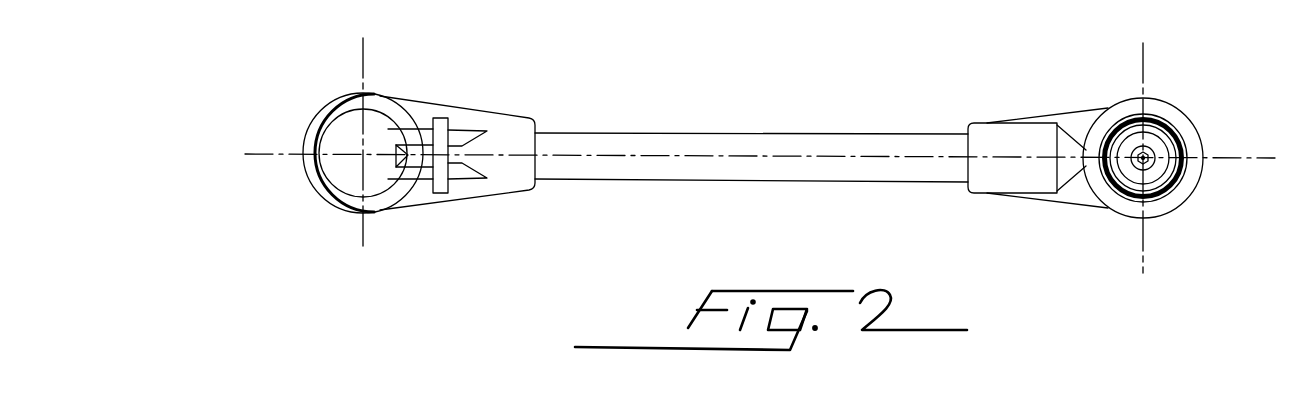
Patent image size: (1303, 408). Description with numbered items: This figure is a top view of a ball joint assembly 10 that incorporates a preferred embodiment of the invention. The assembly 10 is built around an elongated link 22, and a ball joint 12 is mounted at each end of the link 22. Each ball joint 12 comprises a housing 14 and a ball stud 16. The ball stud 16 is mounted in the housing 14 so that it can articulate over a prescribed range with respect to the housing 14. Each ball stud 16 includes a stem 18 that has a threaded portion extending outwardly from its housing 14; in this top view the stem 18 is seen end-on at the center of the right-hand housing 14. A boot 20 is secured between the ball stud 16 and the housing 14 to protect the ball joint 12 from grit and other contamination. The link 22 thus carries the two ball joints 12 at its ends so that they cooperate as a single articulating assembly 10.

The ball joint assembly 10 is at (608, 97).
The ball joint 12 is at (402, 80).
The housing 14 is at (323, 108).
The ball stud 16 is at (1177, 138).
The stem 18 is at (1177, 180).
The boot 20 is at (1117, 197).
The link 22 is at (865, 138).